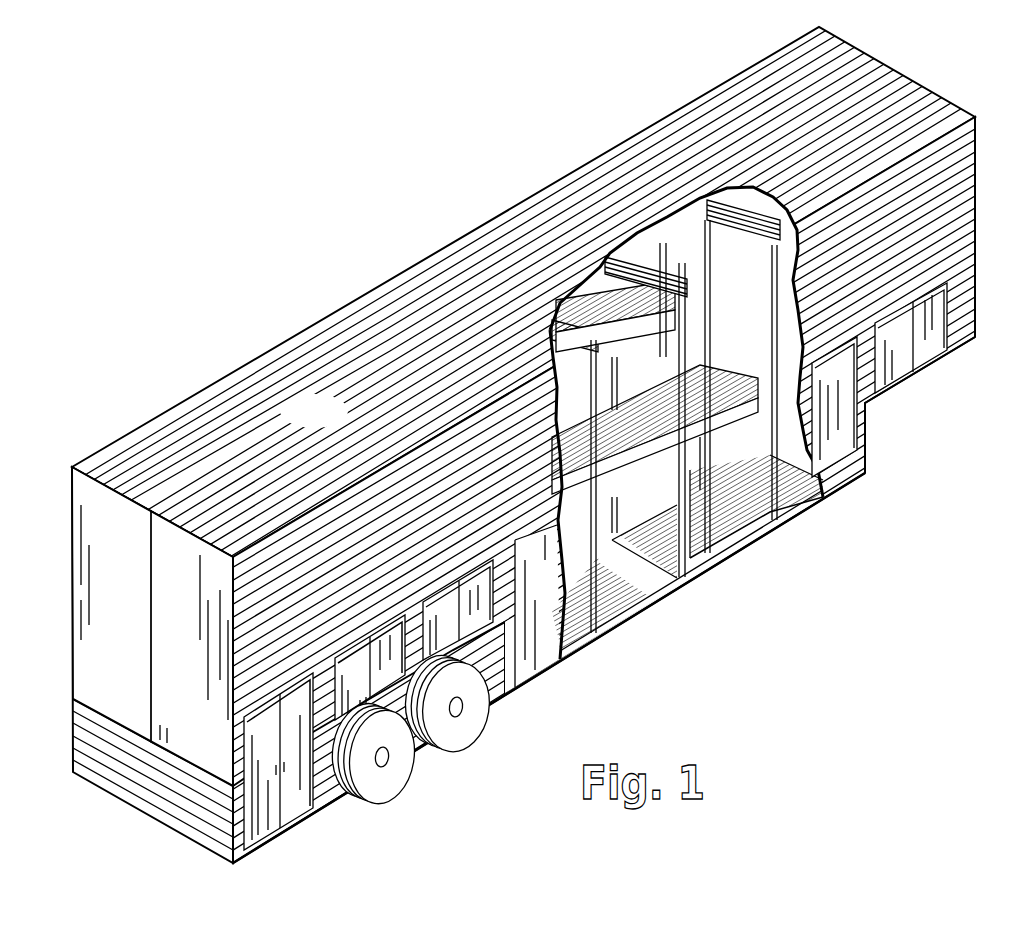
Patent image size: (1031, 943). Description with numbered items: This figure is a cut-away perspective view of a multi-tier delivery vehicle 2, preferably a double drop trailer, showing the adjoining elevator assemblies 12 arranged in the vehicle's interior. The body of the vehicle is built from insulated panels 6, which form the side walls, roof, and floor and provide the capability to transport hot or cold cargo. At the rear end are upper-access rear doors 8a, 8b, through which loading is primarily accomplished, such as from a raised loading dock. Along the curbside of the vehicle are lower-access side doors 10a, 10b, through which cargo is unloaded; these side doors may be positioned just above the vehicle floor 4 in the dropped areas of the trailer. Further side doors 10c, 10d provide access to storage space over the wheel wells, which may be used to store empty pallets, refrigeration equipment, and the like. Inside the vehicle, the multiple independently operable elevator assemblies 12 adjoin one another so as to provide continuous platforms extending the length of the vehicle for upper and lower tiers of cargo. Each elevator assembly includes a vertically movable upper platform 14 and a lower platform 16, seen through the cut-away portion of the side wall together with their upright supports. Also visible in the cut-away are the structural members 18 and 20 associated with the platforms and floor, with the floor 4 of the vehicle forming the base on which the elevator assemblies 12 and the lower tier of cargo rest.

The delivery vehicle 2 is at (325, 426).
The vehicle floor 4 is at (629, 588).
The insulated panels 6 is at (957, 203).
The upper-access rear door 8a is at (127, 640).
The upper-access rear door 8b is at (199, 681).
The lower-access side door 10a is at (267, 826).
The lower-access side door 10b is at (303, 806).
The side door 10c is at (353, 695).
The side door 10d is at (418, 683).
The elevator assemblies 12 is at (692, 583).
The upper platform 14 is at (720, 373).
The lower platform 16 is at (703, 553).
The shelf support board 18 is at (746, 385).
The floor edge rail 20 is at (758, 527).